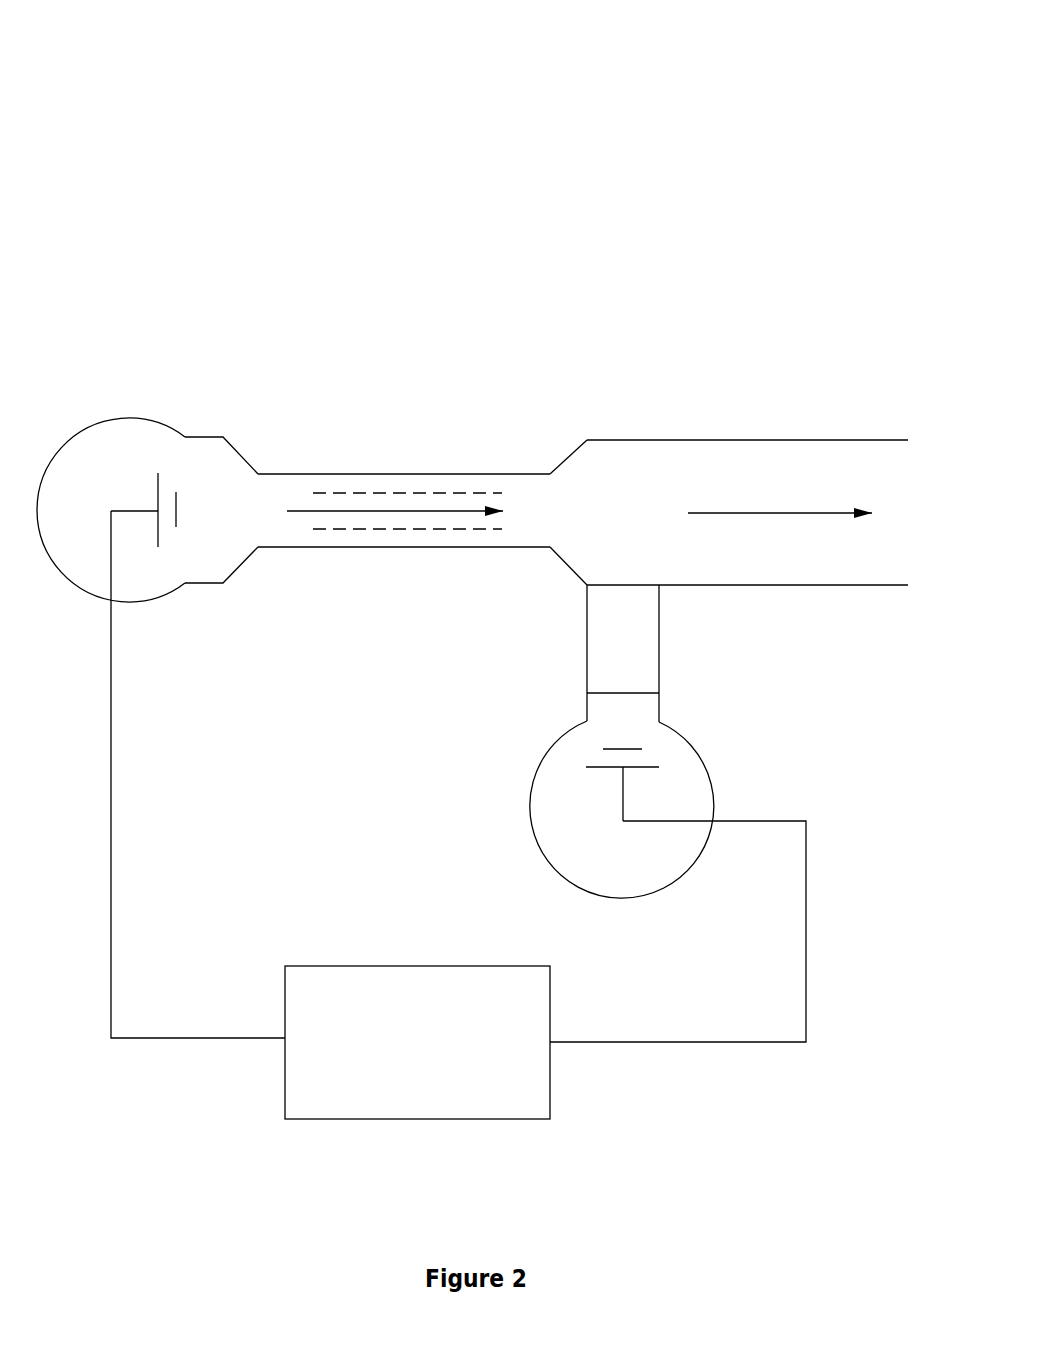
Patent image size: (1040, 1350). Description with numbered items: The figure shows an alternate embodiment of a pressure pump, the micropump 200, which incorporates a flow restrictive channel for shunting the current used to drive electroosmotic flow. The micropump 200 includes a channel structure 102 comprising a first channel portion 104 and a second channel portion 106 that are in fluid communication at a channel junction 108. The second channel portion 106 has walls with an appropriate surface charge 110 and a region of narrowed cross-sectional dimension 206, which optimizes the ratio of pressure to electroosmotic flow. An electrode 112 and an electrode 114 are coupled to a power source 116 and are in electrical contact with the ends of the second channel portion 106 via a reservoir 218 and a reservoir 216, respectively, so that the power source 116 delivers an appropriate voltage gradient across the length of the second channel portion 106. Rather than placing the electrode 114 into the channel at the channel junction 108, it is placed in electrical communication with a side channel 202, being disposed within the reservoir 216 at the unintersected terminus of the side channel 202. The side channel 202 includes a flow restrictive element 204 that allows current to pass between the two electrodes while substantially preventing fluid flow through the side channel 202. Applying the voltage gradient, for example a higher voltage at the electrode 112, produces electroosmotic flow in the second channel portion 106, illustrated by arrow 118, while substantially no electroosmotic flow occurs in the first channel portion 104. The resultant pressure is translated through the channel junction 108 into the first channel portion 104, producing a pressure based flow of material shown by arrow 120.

The micropump 200 is at (122, 110).
The channel structure 102 is at (112, 185).
The first channel portion 104 is at (695, 437).
The second channel portion 106 is at (550, 313).
The channel junction 108 is at (569, 437).
The surface charge 110 is at (388, 530).
The electrode 112 is at (164, 565).
The electrode 114 is at (567, 757).
The power source 116 is at (458, 815).
The arrow 118 is at (458, 513).
The arrow 120 is at (772, 510).
The side channel 202 is at (660, 677).
The flow restrictive element 204 is at (624, 623).
The region of narrowed cross-sectional dimension 206 is at (552, 458).
The reservoir 216 is at (586, 822).
The reservoir 218 is at (112, 473).